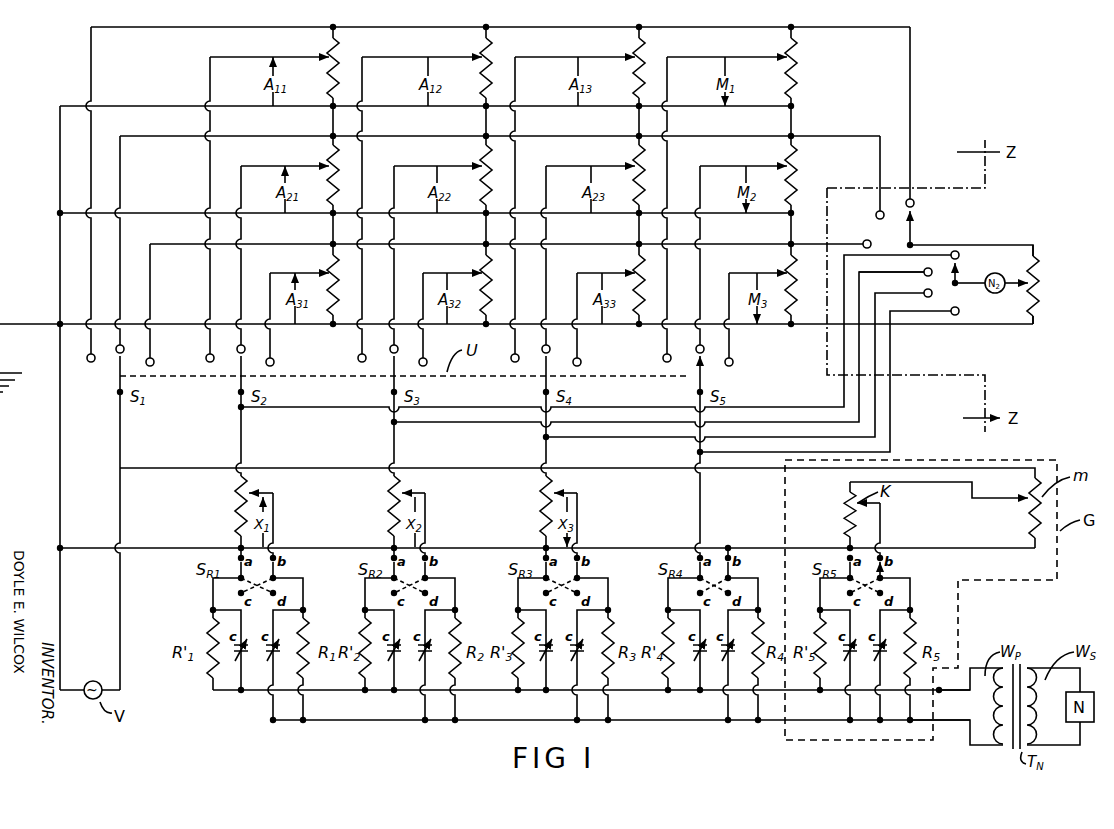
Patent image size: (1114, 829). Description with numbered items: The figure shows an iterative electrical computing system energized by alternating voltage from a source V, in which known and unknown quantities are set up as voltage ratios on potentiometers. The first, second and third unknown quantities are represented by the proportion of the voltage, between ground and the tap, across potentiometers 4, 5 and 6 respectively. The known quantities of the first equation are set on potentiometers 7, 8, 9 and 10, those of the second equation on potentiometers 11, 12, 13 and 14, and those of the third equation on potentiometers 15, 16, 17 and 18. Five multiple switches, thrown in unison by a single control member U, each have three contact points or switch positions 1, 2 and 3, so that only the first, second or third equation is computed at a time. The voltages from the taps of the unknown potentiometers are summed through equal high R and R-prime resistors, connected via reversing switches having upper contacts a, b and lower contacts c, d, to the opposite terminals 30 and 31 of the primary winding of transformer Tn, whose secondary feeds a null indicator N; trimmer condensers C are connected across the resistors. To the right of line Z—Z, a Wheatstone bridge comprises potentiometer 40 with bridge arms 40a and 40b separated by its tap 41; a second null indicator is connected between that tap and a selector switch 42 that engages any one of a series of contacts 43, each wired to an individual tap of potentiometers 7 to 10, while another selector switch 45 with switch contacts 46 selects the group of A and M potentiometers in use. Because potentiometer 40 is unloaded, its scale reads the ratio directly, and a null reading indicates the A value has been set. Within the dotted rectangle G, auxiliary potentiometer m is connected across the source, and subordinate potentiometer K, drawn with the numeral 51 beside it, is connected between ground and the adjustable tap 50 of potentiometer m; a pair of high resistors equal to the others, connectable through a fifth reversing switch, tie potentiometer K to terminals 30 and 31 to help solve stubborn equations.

The switch position 1 is at (383, 352).
The switch position 2 is at (414, 343).
The switch position 3 is at (444, 356).
The potentiometer 4 is at (252, 486).
The potentiometer 5 is at (403, 488).
The potentiometer 6 is at (555, 488).
The potentiometer 7 is at (343, 52).
The potentiometer 8 is at (496, 52).
The potentiometer 9 is at (649, 52).
The potentiometer 10 is at (801, 52).
The potentiometer 11 is at (343, 160).
The potentiometer 12 is at (497, 160).
The potentiometer 13 is at (649, 160).
The potentiometer 14 is at (801, 160).
The potentiometer 15 is at (344, 276).
The potentiometer 16 is at (496, 280).
The potentiometer 17 is at (650, 278).
The potentiometer 18 is at (801, 276).
The primary winding terminal 30 is at (942, 688).
The primary winding terminal 31 is at (913, 723).
The potentiometer 40 is at (1046, 285).
The bridge arm 40a is at (1042, 264).
The bridge arm 40b is at (1042, 312).
The tap 41 is at (1018, 290).
The selector switch 42 is at (960, 277).
The selector switch contacts 43 is at (932, 268).
The selector switch 45 is at (913, 228).
The switch contacts 46 is at (912, 198).
The adjustable tap 50 is at (1025, 500).
The resistor K 51 is at (847, 500).